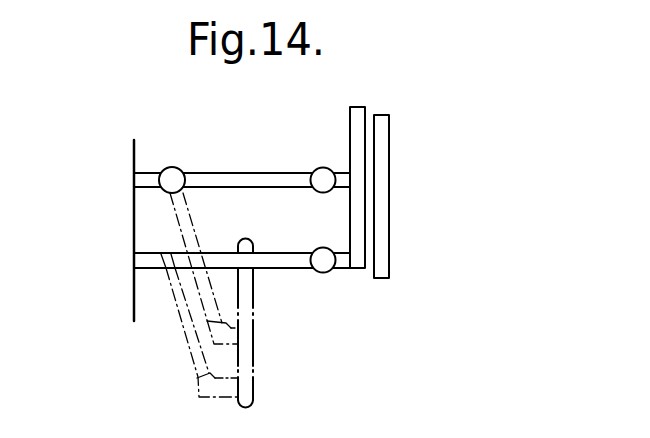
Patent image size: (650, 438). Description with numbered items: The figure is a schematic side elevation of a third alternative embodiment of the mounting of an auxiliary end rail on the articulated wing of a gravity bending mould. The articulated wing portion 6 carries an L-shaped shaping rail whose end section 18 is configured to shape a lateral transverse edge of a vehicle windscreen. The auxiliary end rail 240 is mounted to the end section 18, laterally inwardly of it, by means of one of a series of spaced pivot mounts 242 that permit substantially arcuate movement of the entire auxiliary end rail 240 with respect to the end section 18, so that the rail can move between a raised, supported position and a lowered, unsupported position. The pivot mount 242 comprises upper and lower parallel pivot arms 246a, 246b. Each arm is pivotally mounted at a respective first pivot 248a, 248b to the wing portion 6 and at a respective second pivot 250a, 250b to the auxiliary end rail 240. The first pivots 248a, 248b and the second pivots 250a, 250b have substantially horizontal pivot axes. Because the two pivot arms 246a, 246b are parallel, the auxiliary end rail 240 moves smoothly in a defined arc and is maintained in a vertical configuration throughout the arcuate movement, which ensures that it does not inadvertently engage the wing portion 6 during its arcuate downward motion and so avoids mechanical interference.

The wing portion 6 is at (134, 226).
The end section 18 is at (389, 198).
The auxiliary end rail 240 is at (350, 134).
The pivot mount 242 is at (370, 168).
The upper pivot arm 246a is at (227, 174).
The lower pivot arm 246b is at (295, 269).
The first pivot 248a is at (168, 166).
The first pivot 248b is at (170, 287).
The second pivot 250a is at (325, 191).
The second pivot 250b is at (330, 270).